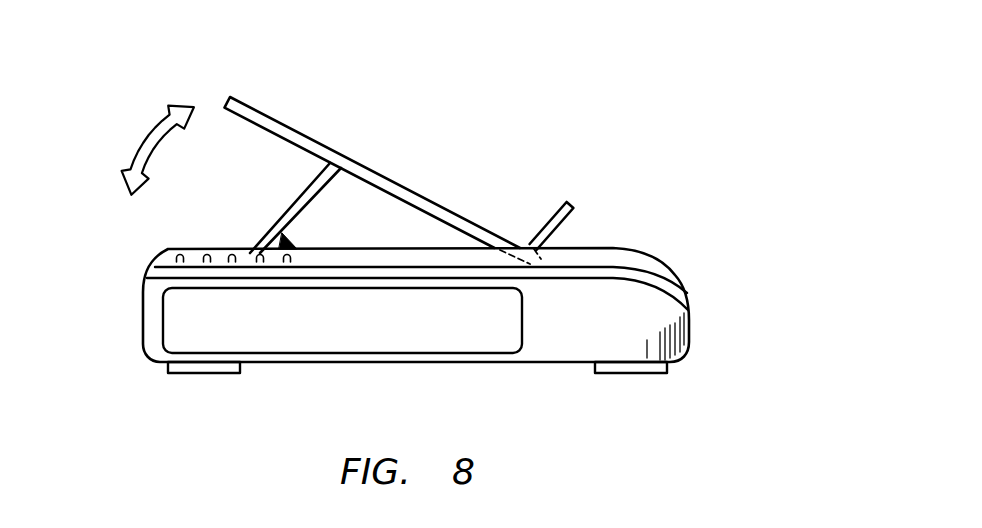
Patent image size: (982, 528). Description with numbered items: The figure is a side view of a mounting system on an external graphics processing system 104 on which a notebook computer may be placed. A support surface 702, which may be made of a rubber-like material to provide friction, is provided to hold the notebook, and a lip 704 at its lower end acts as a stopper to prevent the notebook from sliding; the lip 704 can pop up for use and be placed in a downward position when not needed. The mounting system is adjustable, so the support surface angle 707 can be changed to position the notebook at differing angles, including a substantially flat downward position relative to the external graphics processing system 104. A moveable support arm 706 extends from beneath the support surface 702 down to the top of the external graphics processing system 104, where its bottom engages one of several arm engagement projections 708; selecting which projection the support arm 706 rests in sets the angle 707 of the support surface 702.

The external graphics processing system 104 is at (657, 318).
The support surface 702 is at (283, 124).
The lip 704 is at (547, 224).
The support arm 706 is at (270, 192).
The support surface angle 707 is at (143, 138).
The arm engagement projections 708 is at (174, 264).